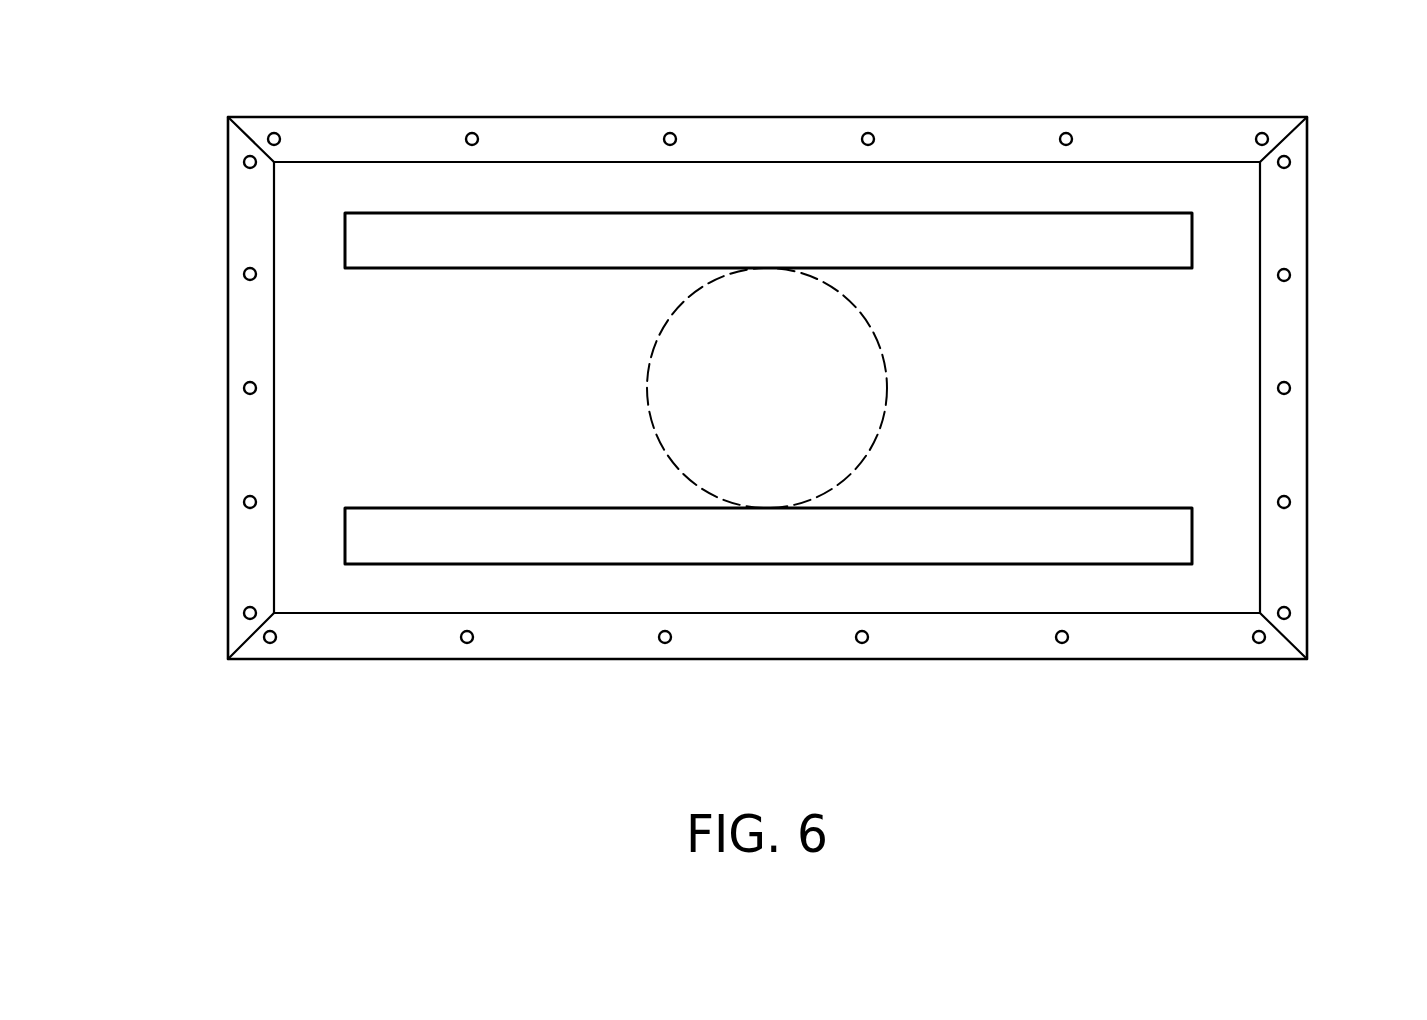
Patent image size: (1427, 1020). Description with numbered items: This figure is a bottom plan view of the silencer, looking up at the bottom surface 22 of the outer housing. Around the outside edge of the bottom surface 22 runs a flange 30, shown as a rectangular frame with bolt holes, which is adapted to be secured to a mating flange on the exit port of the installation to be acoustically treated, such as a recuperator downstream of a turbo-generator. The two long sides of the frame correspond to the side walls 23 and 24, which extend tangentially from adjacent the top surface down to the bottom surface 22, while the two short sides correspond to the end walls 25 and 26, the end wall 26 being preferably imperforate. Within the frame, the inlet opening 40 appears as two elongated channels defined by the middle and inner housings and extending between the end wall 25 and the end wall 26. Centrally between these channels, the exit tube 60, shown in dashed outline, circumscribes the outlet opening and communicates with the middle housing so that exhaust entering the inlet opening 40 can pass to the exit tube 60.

The bottom surface 22 is at (1250, 430).
The side wall 23 is at (372, 614).
The side wall 24 is at (800, 162).
The end wall 25 is at (273, 426).
The end wall 26 is at (1263, 337).
The flange 30 is at (568, 126).
The inlet opening 40 is at (1097, 258).
The exit tube 60 is at (646, 385).